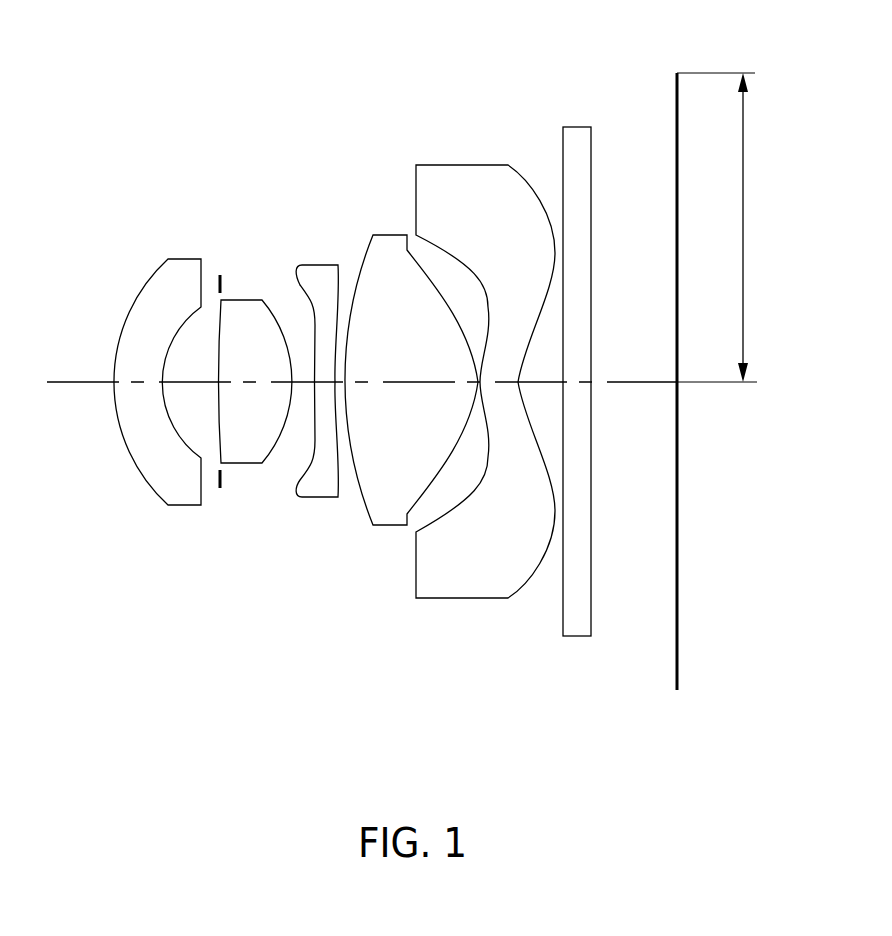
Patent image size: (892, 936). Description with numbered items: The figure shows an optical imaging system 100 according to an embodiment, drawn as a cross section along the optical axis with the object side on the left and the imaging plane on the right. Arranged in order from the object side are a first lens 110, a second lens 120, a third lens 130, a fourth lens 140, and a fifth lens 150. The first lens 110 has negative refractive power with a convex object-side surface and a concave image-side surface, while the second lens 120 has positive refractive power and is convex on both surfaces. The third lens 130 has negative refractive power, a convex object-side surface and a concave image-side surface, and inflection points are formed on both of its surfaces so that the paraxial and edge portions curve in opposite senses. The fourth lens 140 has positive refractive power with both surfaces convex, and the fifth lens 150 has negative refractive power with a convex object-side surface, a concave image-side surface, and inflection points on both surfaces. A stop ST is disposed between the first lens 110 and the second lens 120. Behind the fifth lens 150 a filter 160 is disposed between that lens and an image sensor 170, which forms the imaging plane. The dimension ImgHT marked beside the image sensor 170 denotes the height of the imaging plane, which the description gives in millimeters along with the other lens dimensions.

The optical imaging system 100 is at (337, 140).
The first lens 110 is at (182, 500).
The second lens 120 is at (247, 465).
The third lens 130 is at (322, 498).
The fourth lens 140 is at (382, 525).
The fifth lens 150 is at (448, 593).
The filter 160 is at (580, 636).
The image sensor 170 is at (675, 680).
The stop ST is at (219, 275).
The height of the imaging plane ImgHT is at (748, 227).